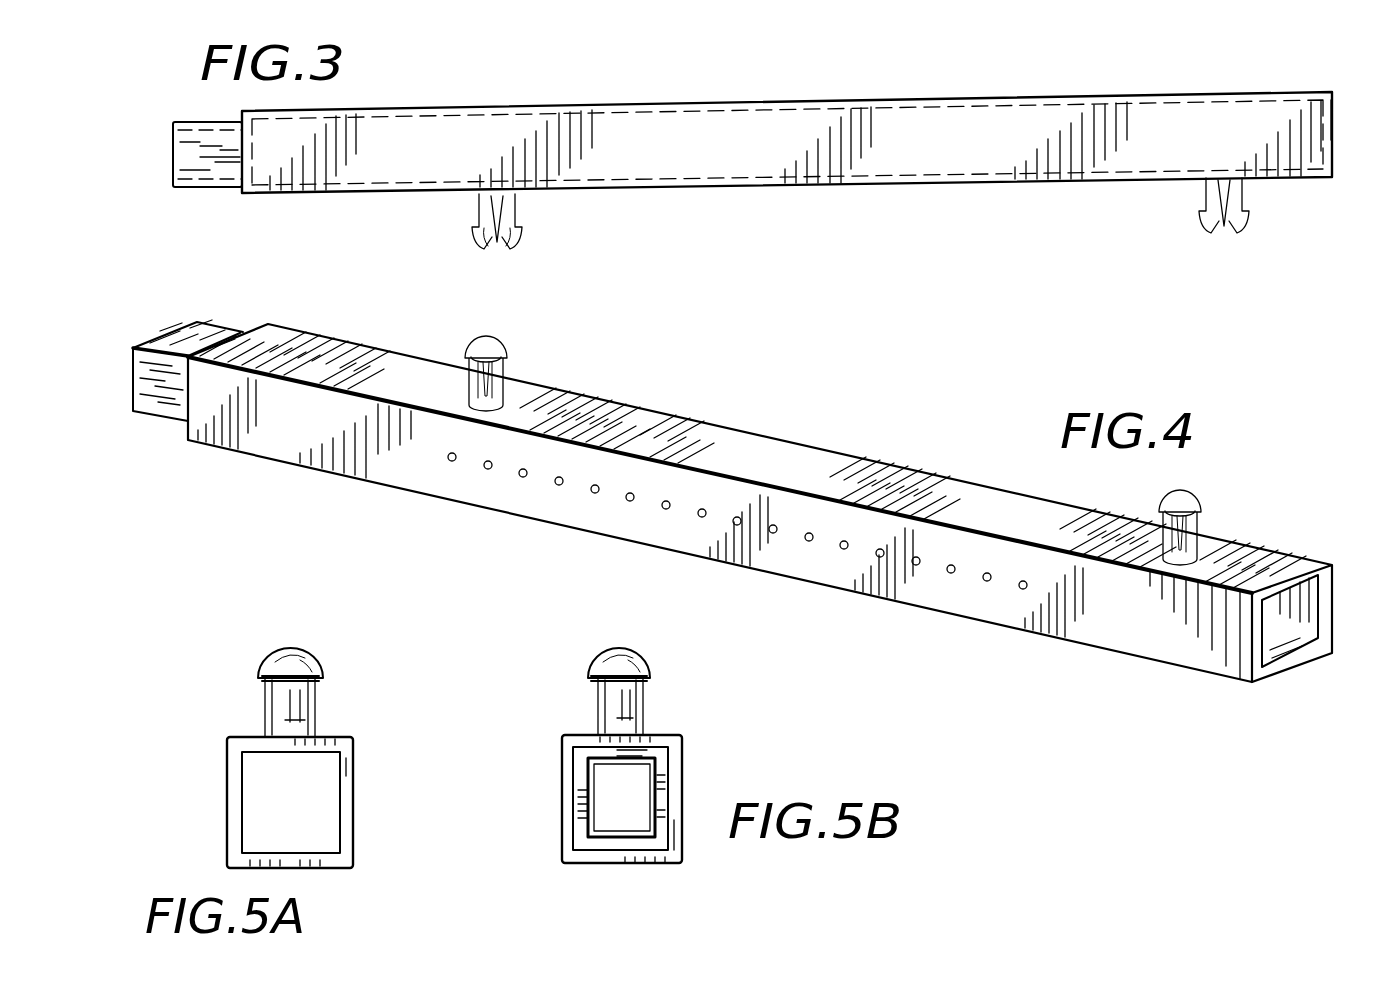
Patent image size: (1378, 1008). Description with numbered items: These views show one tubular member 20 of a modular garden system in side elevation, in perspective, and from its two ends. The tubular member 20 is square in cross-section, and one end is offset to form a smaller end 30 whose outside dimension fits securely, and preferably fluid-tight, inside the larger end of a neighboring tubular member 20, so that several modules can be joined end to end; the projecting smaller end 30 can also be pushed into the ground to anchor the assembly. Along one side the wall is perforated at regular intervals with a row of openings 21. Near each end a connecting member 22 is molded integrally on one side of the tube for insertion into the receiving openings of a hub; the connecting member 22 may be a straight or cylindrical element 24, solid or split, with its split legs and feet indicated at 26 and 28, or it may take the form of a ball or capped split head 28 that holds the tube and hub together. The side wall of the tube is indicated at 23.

In FIG. 3, the tubular member 20 is at (787, 153).
In FIG. 4, the tubular member 20 is at (760, 503).
In FIG. 5A, the tubular member 20 is at (360, 822).
In FIG. 5B, the tubular member 20 is at (548, 805).
In FIG. 4, the openings 21 is at (557, 486).
In FIG. 3, the connecting member 22 is at (862, 248).
In FIG. 4, the connecting member 22 is at (460, 351).
In FIG. 5A, the connecting member 22 is at (253, 694).
In FIG. 5B, the connecting member 22 is at (652, 691).
In FIG. 3, the beam side wall 23 is at (955, 148).
In FIG. 4, the beam side wall 23 is at (623, 418).
In FIG. 3, the cylindrical element 24 is at (508, 207).
In FIG. 3, the clip foot 26 is at (512, 243).
In FIG. 3, the capped split head 28 is at (487, 246).
In FIG. 3, the smaller end 30 is at (208, 188).
In FIG. 4, the smaller end 30 is at (165, 336).
In FIG. 5B, the smaller end 30 is at (661, 787).